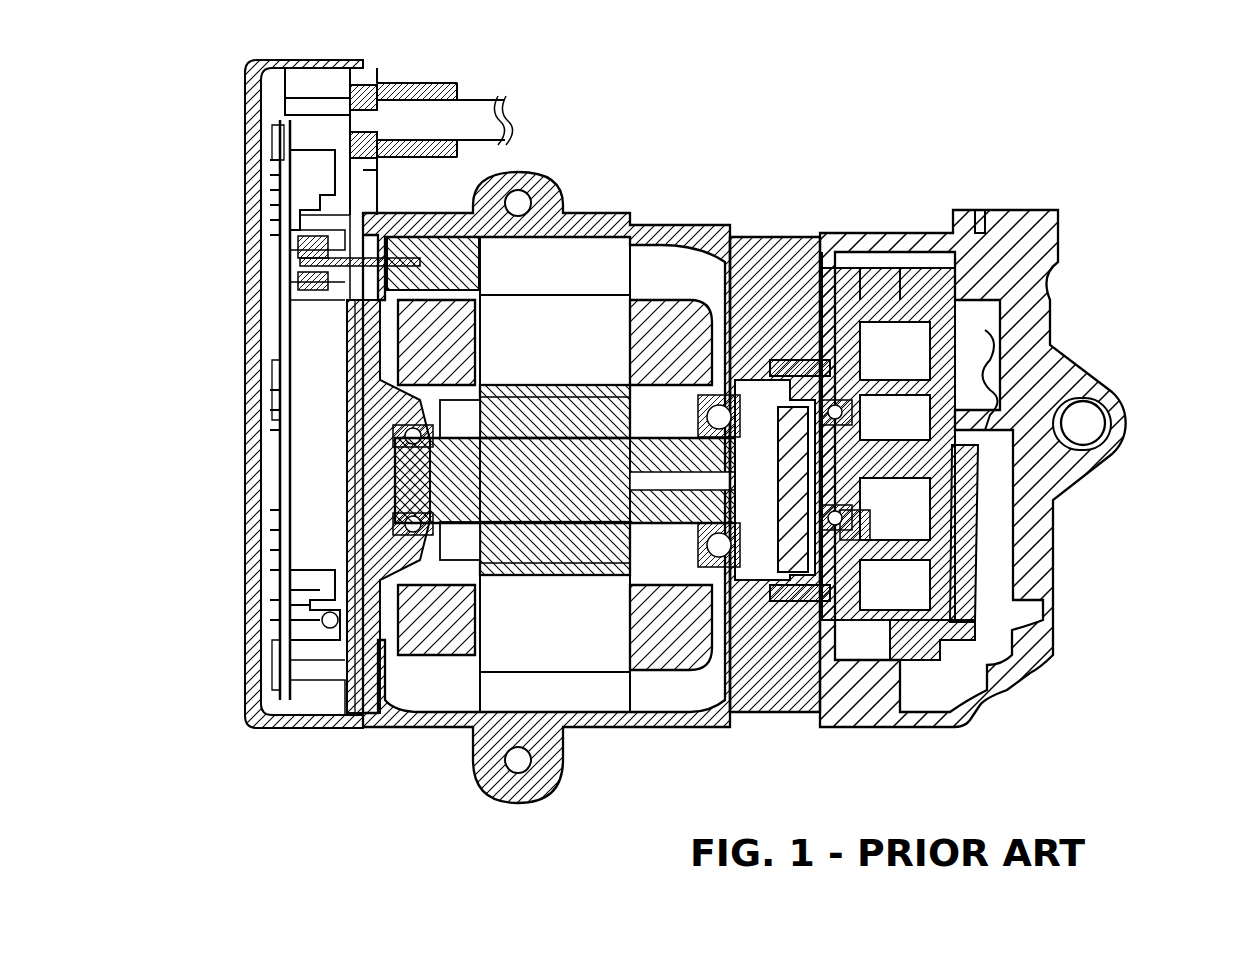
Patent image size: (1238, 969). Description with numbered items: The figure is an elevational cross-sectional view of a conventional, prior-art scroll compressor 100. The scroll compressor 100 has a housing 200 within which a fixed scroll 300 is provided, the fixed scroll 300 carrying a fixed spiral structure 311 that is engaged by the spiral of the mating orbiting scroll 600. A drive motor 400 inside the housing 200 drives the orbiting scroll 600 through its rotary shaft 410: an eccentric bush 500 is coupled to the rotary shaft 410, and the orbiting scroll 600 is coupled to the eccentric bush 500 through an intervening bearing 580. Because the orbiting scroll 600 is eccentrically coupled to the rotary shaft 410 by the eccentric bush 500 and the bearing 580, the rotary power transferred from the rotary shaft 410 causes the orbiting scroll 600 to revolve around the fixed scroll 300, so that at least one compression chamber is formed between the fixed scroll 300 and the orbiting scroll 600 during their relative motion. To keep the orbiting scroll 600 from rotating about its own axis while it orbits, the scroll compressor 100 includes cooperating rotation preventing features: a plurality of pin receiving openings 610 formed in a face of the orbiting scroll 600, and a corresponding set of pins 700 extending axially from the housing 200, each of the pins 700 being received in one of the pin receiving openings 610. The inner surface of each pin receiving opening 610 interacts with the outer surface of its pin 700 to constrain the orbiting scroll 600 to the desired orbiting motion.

The scroll compressor 100 is at (306, 394).
The housing 200 is at (562, 480).
The fixed scroll 300 is at (930, 552).
The fixed spiral structure 311 is at (855, 525).
The drive motor 400 is at (533, 682).
The rotary shaft 410 is at (468, 480).
The eccentric bush 500 is at (764, 468).
The bearing 580 is at (950, 448).
The orbiting scroll 600 is at (1013, 386).
The pin receiving openings 610 is at (830, 310).
The pins 700 is at (790, 356).